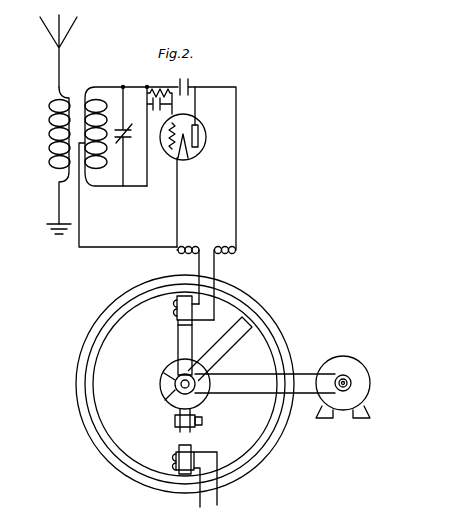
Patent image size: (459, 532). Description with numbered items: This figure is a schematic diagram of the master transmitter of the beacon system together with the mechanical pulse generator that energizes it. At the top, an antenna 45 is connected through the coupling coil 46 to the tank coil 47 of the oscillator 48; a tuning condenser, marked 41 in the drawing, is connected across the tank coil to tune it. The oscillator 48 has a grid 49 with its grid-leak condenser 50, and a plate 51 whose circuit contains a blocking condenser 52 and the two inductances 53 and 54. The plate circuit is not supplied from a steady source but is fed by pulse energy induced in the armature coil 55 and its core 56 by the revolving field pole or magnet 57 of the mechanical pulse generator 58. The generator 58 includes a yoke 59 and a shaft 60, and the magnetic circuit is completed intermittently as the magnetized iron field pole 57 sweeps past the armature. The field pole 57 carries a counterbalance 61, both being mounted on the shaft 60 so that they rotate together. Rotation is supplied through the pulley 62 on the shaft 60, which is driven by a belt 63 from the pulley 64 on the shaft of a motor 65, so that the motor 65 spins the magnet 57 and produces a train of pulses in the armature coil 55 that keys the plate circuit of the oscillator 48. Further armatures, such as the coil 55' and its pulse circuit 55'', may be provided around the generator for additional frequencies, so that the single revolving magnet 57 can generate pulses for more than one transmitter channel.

The antenna 45 is at (52, 36).
The coupling coil 46 is at (49, 124).
The tank coil 47 is at (96, 178).
The variable condenser 41 is at (128, 136).
The grid-leak condenser 50 is at (148, 136).
The blocking condenser 52 is at (189, 84).
The oscillator 48 is at (206, 133).
The grid 49 is at (170, 150).
The plate 51 is at (188, 158).
The inductance 53 is at (180, 254).
The inductance 54 is at (224, 254).
The armature coil 55 is at (180, 308).
The core 56 is at (178, 322).
The field pole 57 is at (178, 340).
The mechanical pulse generator 58 is at (268, 453).
The yoke 59 is at (230, 335).
The shaft 60 is at (176, 387).
The counterbalance 61 is at (175, 421).
The pulley 62 is at (175, 380).
The belt 63 is at (297, 396).
The pulley 64 is at (350, 379).
The motor 65 is at (362, 391).
The armature coil 55' is at (171, 457).
The pulse circuit 55'' is at (221, 479).